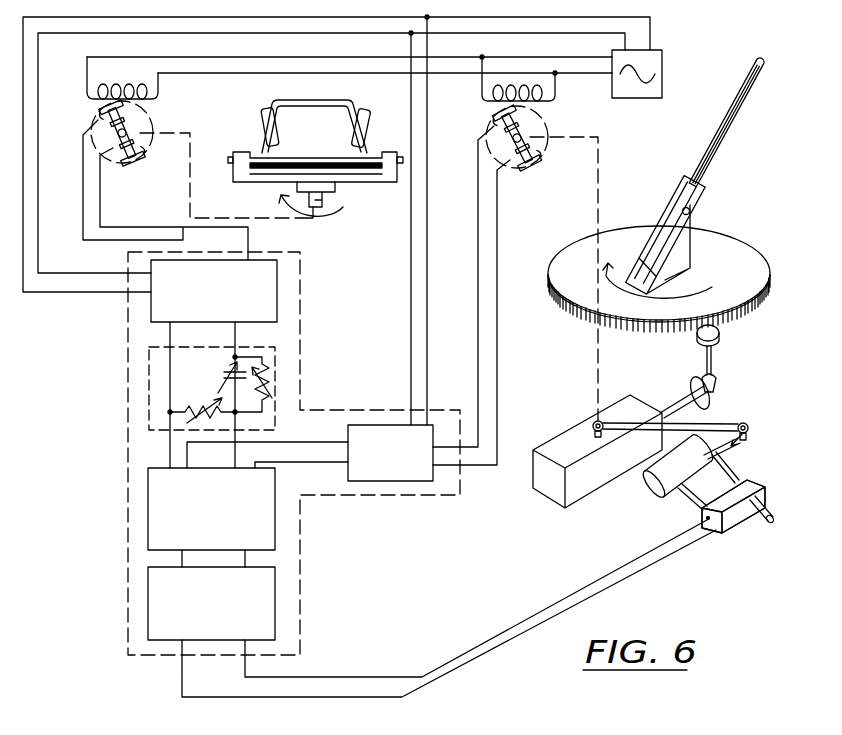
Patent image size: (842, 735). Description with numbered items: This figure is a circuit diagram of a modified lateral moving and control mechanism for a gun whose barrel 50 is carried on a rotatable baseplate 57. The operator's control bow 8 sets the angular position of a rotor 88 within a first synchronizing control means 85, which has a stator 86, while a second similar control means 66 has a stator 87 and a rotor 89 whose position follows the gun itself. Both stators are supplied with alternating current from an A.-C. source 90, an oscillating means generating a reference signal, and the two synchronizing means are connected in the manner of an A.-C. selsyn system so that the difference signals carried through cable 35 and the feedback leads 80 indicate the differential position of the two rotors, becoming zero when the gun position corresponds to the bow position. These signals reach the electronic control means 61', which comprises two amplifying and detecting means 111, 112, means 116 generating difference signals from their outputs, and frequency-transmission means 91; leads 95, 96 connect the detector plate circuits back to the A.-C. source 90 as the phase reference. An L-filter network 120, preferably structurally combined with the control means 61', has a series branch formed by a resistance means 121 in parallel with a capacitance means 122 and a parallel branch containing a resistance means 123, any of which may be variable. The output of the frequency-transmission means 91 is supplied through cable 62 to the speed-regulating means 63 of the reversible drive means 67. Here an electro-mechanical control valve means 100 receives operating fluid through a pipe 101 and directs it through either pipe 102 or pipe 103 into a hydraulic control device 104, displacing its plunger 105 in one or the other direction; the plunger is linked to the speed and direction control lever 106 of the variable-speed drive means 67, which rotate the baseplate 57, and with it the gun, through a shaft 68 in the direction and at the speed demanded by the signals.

The control bow 8 is at (333, 104).
The cable 35 is at (140, 240).
The barrel 50 is at (702, 165).
The baseplate 57 is at (748, 303).
The control means 61' is at (294, 453).
The cable 62 is at (358, 678).
The speed-regulating means 63 is at (762, 477).
The synchronizing means 66 is at (566, 120).
The reversible drive means 67 is at (560, 442).
The shaft 68 is at (714, 355).
The leads 80 is at (479, 285).
The control means 85 is at (167, 112).
The stator 86 is at (95, 100).
The stator 87 is at (488, 101).
The rotor 88 is at (140, 163).
The rotor 89 is at (532, 166).
The A.-C. source 90 is at (663, 78).
The frequency-transmission means 91 is at (276, 583).
The lead 95 is at (80, 273).
The lead 96 is at (84, 300).
The control valve means 100 is at (729, 530).
The pipe 101 is at (752, 528).
The pipe 102 is at (723, 477).
The pipe 103 is at (692, 505).
The hydraulic control device 104 is at (652, 485).
The plunger 105 is at (745, 446).
The speed and direction control lever 106 is at (718, 425).
The amplifying and detecting means 111 is at (278, 283).
The amplifying and detecting means 112 is at (364, 424).
The means generating difference signals 116 is at (276, 503).
The L-filter network 120 is at (157, 387).
The resistance means 121 is at (268, 378).
The capacitance means 122 is at (222, 373).
The resistance means 123 is at (222, 394).